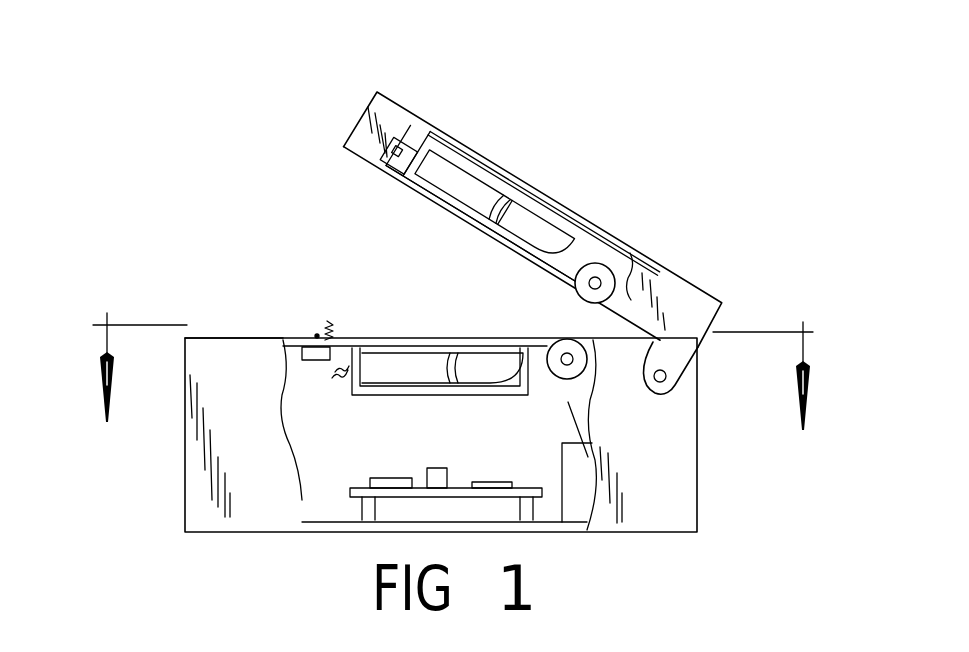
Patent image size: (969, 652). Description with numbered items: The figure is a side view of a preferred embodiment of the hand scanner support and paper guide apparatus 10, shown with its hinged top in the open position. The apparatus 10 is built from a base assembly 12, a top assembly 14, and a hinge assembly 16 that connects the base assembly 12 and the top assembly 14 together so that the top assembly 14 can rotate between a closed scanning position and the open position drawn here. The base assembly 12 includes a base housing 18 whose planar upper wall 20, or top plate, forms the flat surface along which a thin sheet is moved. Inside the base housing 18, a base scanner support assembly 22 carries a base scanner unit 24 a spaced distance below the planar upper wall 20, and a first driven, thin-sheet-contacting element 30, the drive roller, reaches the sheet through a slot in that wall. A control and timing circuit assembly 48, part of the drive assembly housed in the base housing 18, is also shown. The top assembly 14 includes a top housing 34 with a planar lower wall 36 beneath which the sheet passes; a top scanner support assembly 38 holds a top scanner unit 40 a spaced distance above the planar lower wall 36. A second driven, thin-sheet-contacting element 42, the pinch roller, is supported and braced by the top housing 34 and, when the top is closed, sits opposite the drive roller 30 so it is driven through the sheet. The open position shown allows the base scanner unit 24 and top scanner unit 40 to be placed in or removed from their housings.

The hand scanner support and paper guide apparatus 10 is at (673, 190).
The base assembly 12 is at (667, 540).
The top assembly 14 is at (320, 127).
The hinge assembly 16 is at (677, 393).
The base housing 18 is at (242, 493).
The planar upper wall 20 is at (258, 338).
The base scanner support assembly 22 is at (392, 392).
The base scanner unit 24 is at (417, 337).
The first driven, thin-sheet-contacting element 30 is at (575, 370).
The top housing 34 is at (360, 123).
The planar lower wall 36 is at (397, 177).
The top scanner support assembly 38 is at (510, 177).
The top scanner unit 40 is at (460, 223).
The second driven, thin-sheet-contacting element 42 is at (610, 283).
The control and timing circuit assembly 48 is at (503, 497).